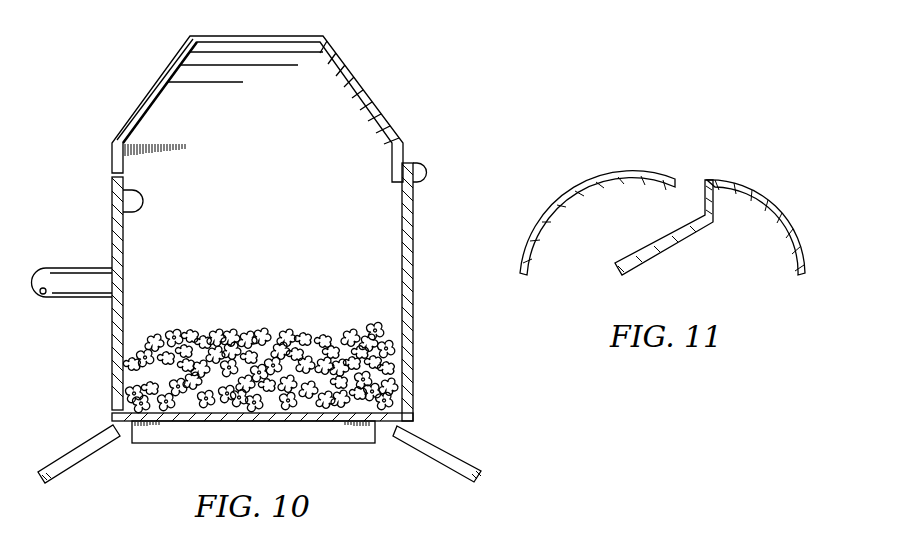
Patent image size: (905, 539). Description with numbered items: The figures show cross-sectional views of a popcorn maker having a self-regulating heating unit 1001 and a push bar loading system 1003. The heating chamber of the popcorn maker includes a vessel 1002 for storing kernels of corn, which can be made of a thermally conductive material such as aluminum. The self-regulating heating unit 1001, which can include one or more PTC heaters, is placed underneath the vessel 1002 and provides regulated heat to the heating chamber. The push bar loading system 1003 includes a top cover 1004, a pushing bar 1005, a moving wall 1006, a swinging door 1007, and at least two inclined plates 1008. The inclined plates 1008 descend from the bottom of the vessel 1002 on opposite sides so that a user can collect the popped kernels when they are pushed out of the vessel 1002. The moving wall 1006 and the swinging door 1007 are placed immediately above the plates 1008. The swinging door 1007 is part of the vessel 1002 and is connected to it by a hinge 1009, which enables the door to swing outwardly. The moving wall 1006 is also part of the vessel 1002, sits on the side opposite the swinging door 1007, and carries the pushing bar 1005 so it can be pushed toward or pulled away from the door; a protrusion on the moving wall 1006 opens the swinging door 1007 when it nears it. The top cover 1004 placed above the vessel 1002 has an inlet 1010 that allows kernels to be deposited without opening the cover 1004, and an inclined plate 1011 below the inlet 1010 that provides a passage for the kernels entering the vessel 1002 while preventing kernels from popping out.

In FIG. 10, the self-regulating heating unit 1001 is at (160, 444).
In FIG. 10, the vessel 1002 is at (223, 345).
In FIG. 10, the push bar loading system 1003 is at (130, 55).
In FIG. 11, the top cover 1004 is at (800, 268).
In FIG. 10, the pushing bar 1005 is at (67, 300).
In FIG. 10, the moving wall 1006 is at (112, 228).
In FIG. 10, the swinging door 1007 is at (415, 342).
In FIG. 10, the inclined plates 1008 is at (82, 440).
In FIG. 10, the hinge 1009 is at (442, 148).
In FIG. 11, the inlet 1010 is at (662, 208).
In FIG. 11, the inclined plate 1011 is at (652, 260).